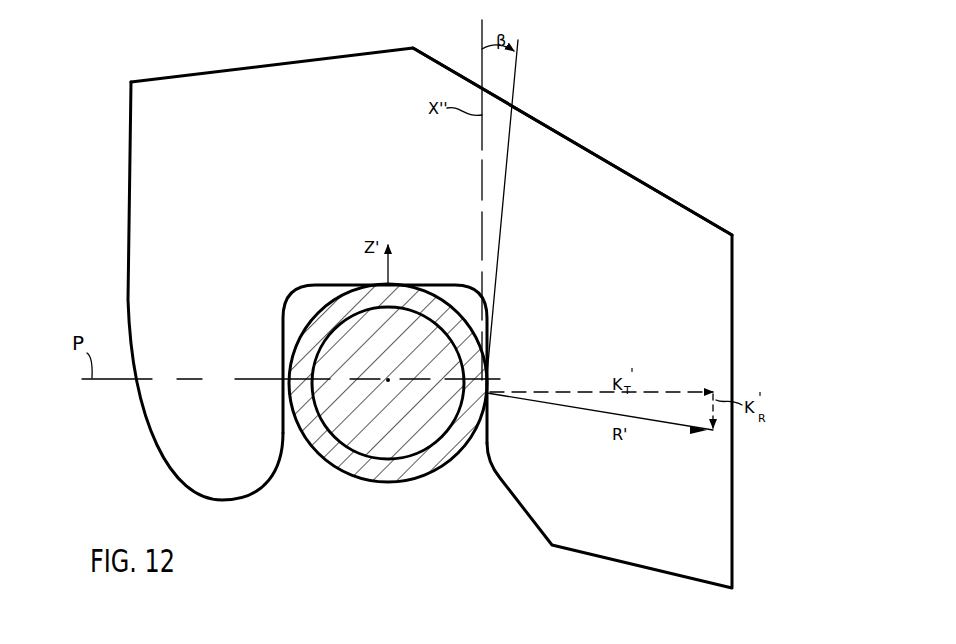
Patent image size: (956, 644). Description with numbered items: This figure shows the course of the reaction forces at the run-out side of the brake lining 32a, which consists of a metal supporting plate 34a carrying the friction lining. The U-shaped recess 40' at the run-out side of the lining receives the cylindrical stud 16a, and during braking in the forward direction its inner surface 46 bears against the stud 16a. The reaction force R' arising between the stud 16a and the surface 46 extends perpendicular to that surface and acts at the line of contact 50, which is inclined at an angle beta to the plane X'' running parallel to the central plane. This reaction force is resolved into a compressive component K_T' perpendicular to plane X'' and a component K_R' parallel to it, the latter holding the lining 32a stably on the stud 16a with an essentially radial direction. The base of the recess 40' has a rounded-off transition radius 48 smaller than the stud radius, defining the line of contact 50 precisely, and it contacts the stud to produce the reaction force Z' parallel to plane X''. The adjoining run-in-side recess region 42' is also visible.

The brake lining 32a is at (622, 72).
The supporting plate 34a is at (597, 207).
The groove / recess 42' is at (191, 291).
The transition radius 48 is at (297, 303).
The U-shaped recess 40' is at (388, 437).
The stud 16a is at (325, 472).
The inner surface 46 is at (497, 353).
The line of contact 50 is at (498, 408).